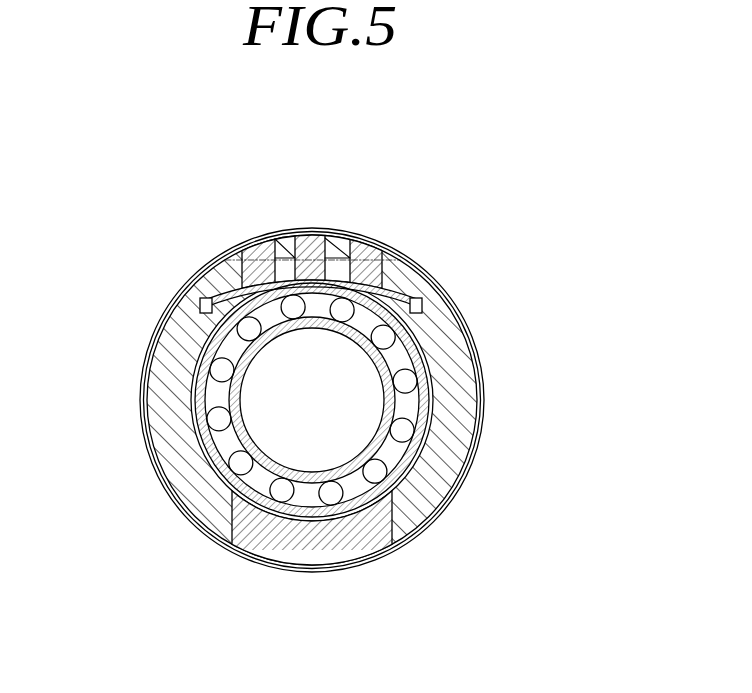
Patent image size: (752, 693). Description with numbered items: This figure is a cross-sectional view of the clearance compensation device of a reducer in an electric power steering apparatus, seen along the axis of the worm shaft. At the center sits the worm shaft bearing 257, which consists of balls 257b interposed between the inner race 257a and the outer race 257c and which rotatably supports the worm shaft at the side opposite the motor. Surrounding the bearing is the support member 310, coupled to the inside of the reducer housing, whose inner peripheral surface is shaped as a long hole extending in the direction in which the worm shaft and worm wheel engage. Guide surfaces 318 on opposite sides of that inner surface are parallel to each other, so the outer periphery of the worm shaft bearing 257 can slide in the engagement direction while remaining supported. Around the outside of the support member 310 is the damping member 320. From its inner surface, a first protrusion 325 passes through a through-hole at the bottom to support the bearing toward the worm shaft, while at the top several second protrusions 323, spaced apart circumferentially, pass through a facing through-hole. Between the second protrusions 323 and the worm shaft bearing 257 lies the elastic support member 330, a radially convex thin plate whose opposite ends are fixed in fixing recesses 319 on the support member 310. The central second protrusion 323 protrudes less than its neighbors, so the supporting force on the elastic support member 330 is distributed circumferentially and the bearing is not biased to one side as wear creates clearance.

The support member 310 is at (438, 480).
The guide surfaces 318 is at (190, 398).
The fixing recesses 319 is at (420, 311).
The damping member 320 is at (473, 462).
The second protrusion 323 is at (313, 235).
The first protrusion 325 is at (303, 550).
The elastic support member 330 is at (347, 281).
The worm shaft bearing 257 is at (429, 400).
The inner race 257a is at (411, 353).
The balls 257b is at (417, 379).
The outer race 257c is at (394, 396).